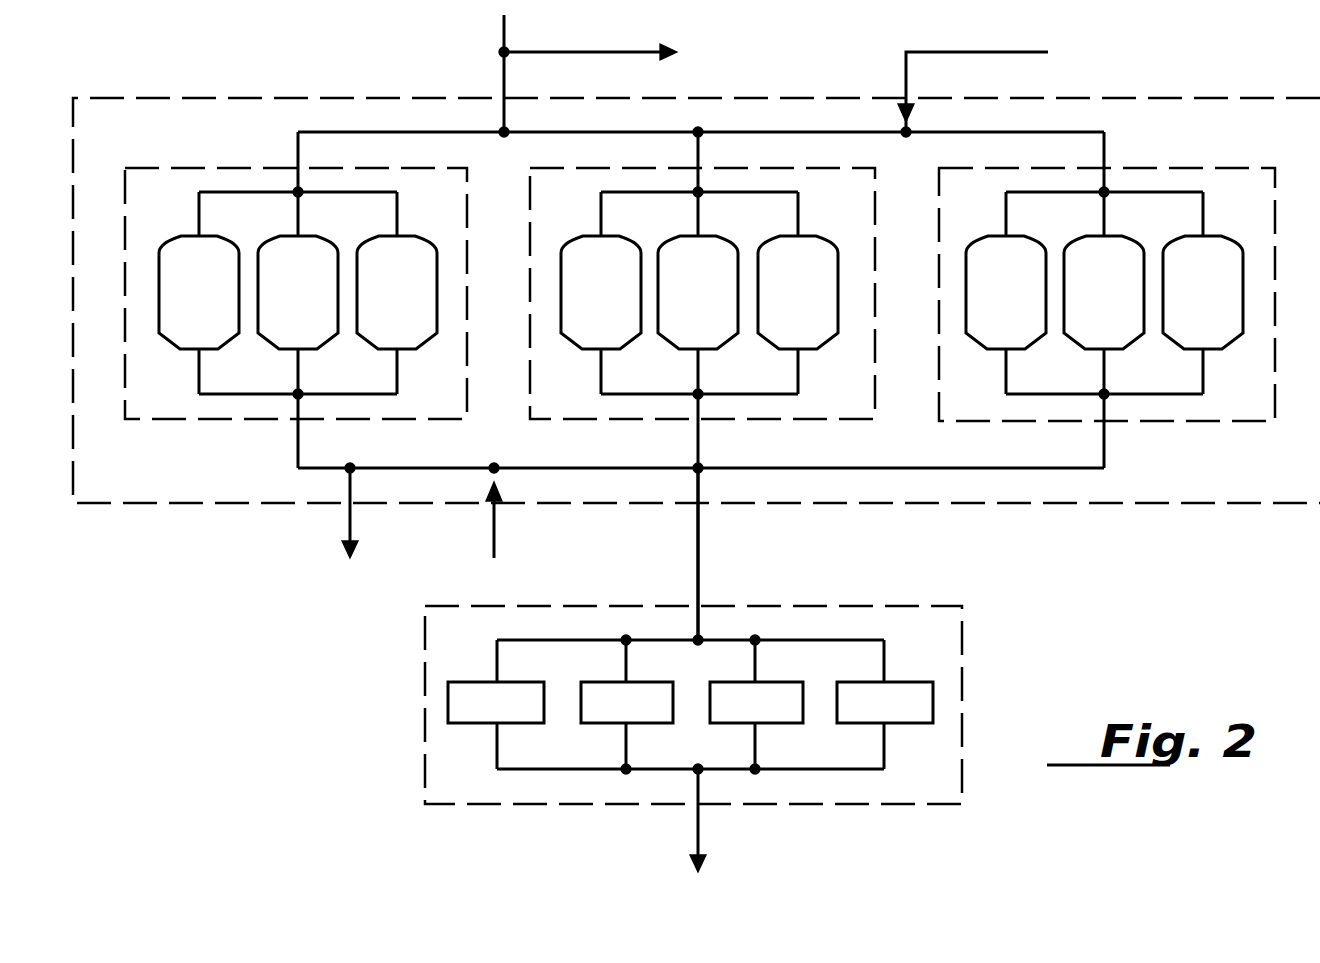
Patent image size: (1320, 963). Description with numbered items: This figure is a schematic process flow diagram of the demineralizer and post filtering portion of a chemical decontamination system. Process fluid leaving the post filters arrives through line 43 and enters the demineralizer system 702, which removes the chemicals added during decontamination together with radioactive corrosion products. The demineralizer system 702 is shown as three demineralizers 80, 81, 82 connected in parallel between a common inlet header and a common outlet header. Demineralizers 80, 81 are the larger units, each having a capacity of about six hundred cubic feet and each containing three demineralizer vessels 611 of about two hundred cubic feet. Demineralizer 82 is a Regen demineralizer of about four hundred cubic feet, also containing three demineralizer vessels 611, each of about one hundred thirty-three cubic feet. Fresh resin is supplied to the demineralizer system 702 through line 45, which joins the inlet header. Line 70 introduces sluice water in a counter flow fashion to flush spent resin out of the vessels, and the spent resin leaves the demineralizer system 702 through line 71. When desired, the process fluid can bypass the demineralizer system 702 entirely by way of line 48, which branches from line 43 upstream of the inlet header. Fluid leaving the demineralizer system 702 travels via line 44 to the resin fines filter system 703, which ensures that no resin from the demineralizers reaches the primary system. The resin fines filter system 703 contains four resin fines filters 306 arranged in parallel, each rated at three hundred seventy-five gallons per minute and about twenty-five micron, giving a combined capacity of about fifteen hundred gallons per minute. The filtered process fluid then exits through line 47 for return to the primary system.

The demineralizer system 702 is at (249, 98).
The demineralizer 80 is at (187, 168).
The demineralizer 81 is at (530, 222).
The Regen demineralizer 82 is at (939, 222).
The demineralizer vessel 611 is at (217, 306).
The line 43 is at (504, 33).
The line 48 is at (618, 52).
The line 45 is at (982, 52).
The line 71 is at (348, 518).
The line 70 is at (493, 538).
The line 44 is at (700, 568).
The resin fines filter system 703 is at (964, 660).
The resin fines filter 306 is at (530, 716).
The line 47 is at (700, 838).